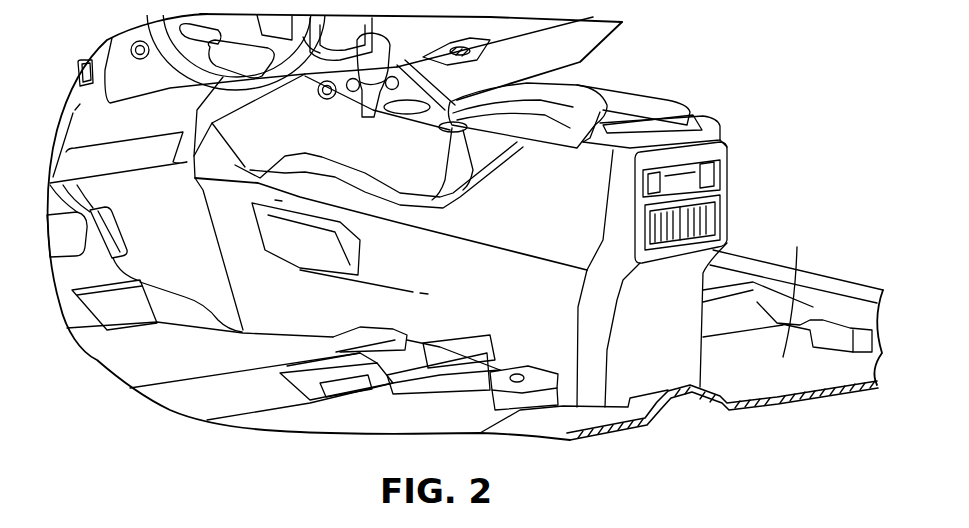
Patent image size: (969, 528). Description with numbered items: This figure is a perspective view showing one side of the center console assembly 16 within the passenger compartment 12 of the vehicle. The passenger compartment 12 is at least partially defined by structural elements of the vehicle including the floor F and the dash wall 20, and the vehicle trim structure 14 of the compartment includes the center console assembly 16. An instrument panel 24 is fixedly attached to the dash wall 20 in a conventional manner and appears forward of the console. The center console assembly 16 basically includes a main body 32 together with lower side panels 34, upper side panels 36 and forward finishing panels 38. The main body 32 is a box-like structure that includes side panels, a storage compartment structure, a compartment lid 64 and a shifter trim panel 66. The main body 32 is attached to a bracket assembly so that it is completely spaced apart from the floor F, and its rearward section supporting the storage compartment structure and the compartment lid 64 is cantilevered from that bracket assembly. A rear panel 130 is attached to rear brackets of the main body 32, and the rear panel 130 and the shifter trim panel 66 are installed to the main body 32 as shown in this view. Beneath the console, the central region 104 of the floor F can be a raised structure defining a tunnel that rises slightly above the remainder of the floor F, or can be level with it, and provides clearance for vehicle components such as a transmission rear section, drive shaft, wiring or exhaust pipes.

The passenger compartment 12 is at (693, 52).
The vehicle trim structure 14 is at (729, 213).
The center console assembly 16 is at (714, 119).
The dash wall 20 is at (83, 270).
The instrument panel 24 is at (102, 73).
The main body 32 is at (545, 209).
The lower side panels 34 is at (467, 333).
The upper side panels 36 is at (260, 133).
The forward finishing panels 38 is at (150, 208).
The compartment lid 64 is at (509, 97).
The shifter trim panel 66 is at (413, 125).
The central region 104 is at (660, 418).
The rear panel 130 is at (658, 343).
The floor F is at (795, 294).